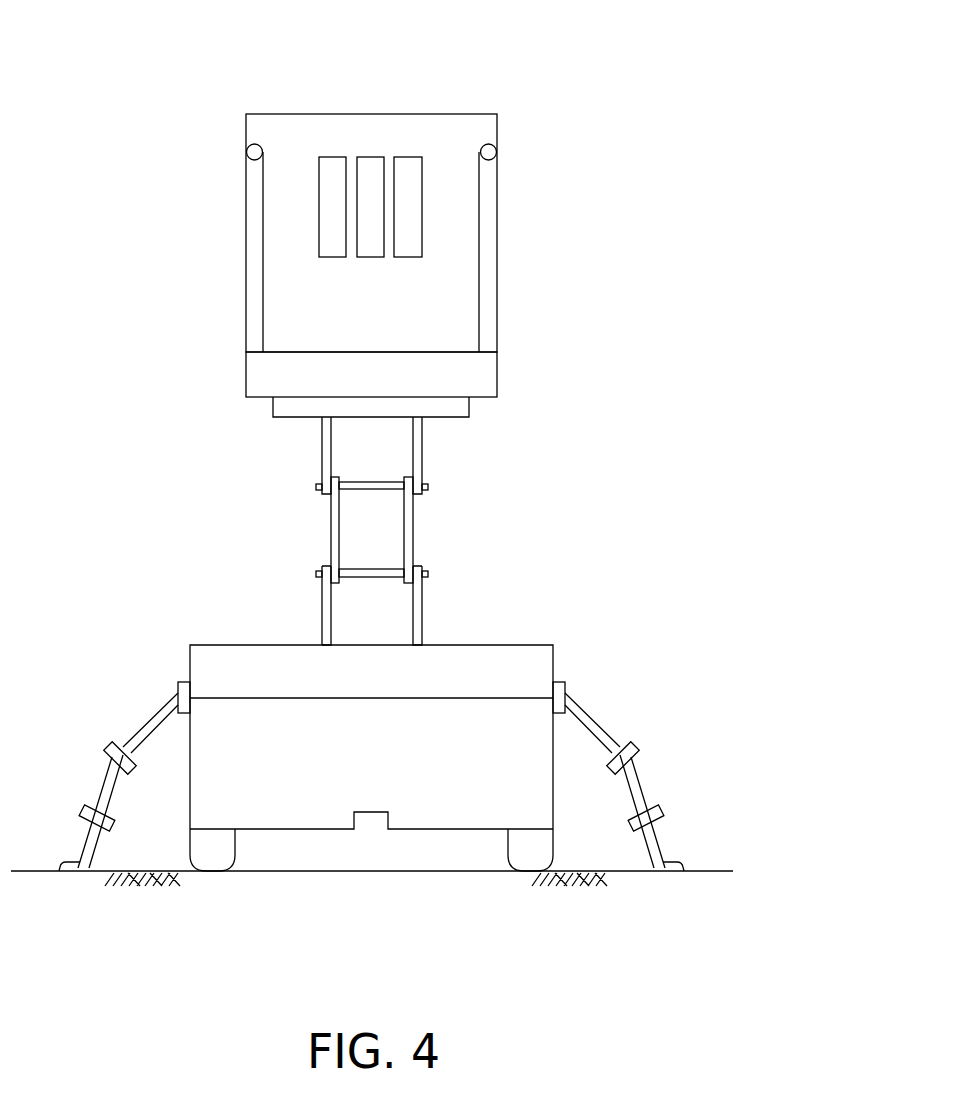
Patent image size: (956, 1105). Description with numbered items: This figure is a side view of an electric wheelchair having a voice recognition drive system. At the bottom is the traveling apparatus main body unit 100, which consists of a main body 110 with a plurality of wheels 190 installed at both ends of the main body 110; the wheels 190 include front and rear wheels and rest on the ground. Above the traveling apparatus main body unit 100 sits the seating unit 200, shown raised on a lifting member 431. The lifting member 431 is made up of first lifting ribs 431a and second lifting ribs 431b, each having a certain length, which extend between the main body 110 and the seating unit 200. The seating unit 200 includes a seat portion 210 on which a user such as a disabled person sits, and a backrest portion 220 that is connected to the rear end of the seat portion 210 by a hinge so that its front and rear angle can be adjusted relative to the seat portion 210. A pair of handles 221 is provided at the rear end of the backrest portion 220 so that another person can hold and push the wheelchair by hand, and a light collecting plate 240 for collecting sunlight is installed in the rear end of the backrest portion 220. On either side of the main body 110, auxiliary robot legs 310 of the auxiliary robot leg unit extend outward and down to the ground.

The traveling apparatus main body unit 100 is at (373, 852).
The main body 110 is at (535, 668).
The wheels 190 is at (213, 862).
The seating unit 200 is at (468, 88).
The seat portion 210 is at (487, 377).
The backrest portion 220 is at (488, 126).
The handles 221 is at (488, 173).
The light collecting plate 240 is at (410, 231).
The auxiliary robot legs 310 is at (120, 708).
The lifting member 431 is at (604, 462).
The first lifting ribs 431a is at (400, 542).
The second lifting ribs 431b is at (418, 461).